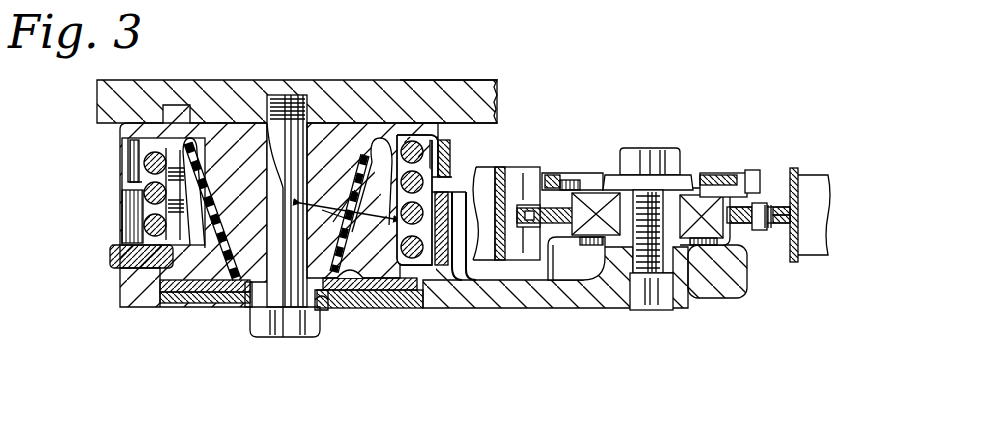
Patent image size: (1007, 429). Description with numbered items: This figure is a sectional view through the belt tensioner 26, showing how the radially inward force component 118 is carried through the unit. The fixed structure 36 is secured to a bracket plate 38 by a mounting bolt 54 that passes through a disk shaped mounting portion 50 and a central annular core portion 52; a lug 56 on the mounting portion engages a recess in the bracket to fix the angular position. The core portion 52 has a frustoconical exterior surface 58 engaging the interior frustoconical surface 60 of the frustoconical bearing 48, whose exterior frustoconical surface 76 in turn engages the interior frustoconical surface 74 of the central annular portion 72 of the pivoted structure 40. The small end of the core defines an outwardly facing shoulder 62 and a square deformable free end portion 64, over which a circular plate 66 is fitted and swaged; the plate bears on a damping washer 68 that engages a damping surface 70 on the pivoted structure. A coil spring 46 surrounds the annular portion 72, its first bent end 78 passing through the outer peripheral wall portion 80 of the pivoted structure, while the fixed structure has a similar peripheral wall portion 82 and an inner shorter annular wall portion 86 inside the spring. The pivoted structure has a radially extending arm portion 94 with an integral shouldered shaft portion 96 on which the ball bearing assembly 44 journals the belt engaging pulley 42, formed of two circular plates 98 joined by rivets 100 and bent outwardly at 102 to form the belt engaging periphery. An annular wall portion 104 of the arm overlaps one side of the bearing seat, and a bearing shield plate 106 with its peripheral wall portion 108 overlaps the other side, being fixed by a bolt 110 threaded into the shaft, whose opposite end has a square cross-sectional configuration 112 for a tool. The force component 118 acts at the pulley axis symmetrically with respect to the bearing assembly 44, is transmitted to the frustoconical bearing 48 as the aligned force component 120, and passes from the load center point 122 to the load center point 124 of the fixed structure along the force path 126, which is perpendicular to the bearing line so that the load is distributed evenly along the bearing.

The belt tensioner 26 is at (806, 191).
The fixed structure 36 is at (346, 116).
The bracket plate 38 is at (413, 107).
The pivoted structure 40 is at (507, 312).
The belt engaging pulley 42 is at (799, 162).
The ball bearing assembly 44 is at (578, 176).
The coil spring 46 is at (432, 160).
The frustoconical bearing 48 is at (236, 168).
The disk shaped mounting portion 50 is at (423, 135).
The central annular core portion 52 is at (233, 293).
The mounting bolt 54 is at (280, 337).
The lug 56 is at (170, 105).
The frustoconical exterior surface 58 is at (357, 293).
The interior frustoconical surface 60 is at (375, 297).
The outwardly facing shoulder 62 is at (248, 307).
The deformable free end portion 64 is at (310, 337).
The circular plate 66 is at (188, 298).
The damping washer 68 is at (420, 297).
The damping surface 70 is at (140, 307).
The central annular portion 72 is at (197, 206).
The interior frustoconical surface 74 is at (190, 238).
The exterior frustoconical surface 76 is at (185, 177).
The first bent end 78 is at (110, 255).
The outer peripheral wall portion 80 is at (128, 215).
The peripheral wall portion 82 is at (128, 148).
The inner shorter annular wall portion 86 is at (397, 160).
The arm portion 94 is at (518, 300).
The shouldered shaft portion 96 is at (698, 188).
The circular plates 98 is at (737, 217).
The rivets 100 is at (798, 192).
The belt engaging periphery 102 is at (797, 245).
The annular wall portion 104 is at (545, 258).
The bearing shield plate 106 is at (579, 182).
The peripheral wall portion 108 is at (755, 193).
The bolt 110 is at (641, 152).
The square cross-sectional configuration 112 is at (663, 310).
The radially inward force component 118 is at (705, 298).
The force component arrow 120 is at (422, 180).
The load center point 122 is at (368, 140).
The load center point 124 is at (278, 150).
The force path 126 is at (313, 302).